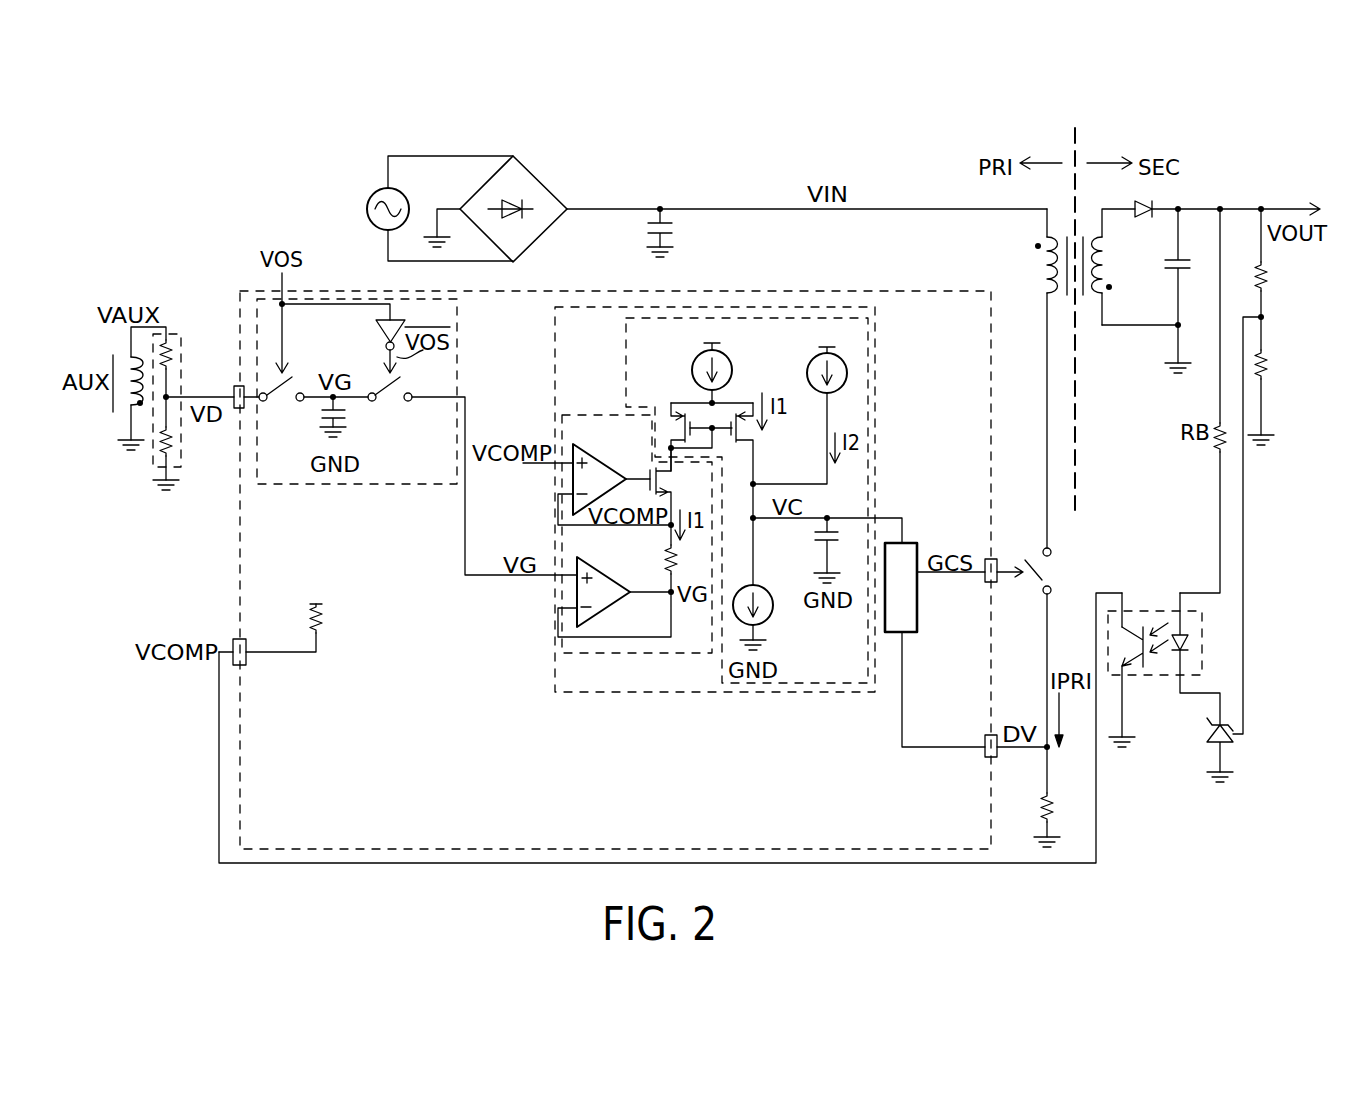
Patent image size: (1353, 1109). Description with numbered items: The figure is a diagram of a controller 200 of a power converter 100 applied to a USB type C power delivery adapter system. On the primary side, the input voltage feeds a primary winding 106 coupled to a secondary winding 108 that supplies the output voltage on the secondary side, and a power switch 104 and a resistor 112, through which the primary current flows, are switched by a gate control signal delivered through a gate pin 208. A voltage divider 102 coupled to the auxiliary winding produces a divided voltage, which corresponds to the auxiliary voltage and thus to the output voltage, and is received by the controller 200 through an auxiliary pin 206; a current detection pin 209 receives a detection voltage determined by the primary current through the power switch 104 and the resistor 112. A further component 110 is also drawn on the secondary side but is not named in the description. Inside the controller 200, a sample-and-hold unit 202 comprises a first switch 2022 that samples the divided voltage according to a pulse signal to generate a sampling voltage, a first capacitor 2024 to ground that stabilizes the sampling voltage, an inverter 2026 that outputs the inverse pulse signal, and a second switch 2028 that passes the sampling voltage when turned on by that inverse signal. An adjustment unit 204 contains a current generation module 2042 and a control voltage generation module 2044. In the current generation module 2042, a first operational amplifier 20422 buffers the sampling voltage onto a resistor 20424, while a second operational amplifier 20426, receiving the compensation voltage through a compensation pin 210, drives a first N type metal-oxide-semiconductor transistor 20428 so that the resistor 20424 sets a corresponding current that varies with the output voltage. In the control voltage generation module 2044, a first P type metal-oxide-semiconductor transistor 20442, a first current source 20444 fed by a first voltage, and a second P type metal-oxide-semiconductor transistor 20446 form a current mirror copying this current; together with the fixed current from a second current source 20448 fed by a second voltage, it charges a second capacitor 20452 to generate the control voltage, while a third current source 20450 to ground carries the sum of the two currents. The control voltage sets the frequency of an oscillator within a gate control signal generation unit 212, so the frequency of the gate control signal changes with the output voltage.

The power converter 100 is at (1238, 186).
The voltage divider 102 is at (181, 334).
The power switch 104 is at (1043, 568).
The primary winding 106 is at (1040, 263).
The secondary winding 108 is at (1103, 262).
The optocoupler 110 is at (1167, 611).
The resistor 112 is at (1050, 798).
The controller 200 is at (705, 290).
The sample-and-hold unit 202 is at (322, 299).
The adjustment unit 204 is at (700, 694).
The auxiliary pin 206 is at (235, 388).
The gate pin 208 is at (997, 580).
The current detection pin 209 is at (997, 756).
The compensation pin 210 is at (233, 645).
The gate control signal generation unit 212 is at (907, 543).
The first switch 2022 is at (281, 385).
The first capacitor 2024 is at (353, 413).
The inverter 2026 is at (378, 332).
The second switch 2028 is at (391, 400).
The current generation module 2042 is at (630, 655).
The control voltage generation module 2044 is at (788, 685).
The first operational amplifier 20422 is at (623, 608).
The resistor 20424 is at (665, 552).
The second operational amplifier 20426 is at (575, 443).
The first N type metal-oxide-semiconductor transistor 20428 is at (650, 473).
The first P type metal-oxide-semiconductor transistor 20442 is at (675, 428).
The first current source 20444 is at (694, 368).
The second P type metal-oxide-semiconductor transistor 20446 is at (754, 442).
The second current source 20448 is at (809, 371).
The third current source 20450 is at (773, 612).
The second capacitor 20452 is at (815, 533).